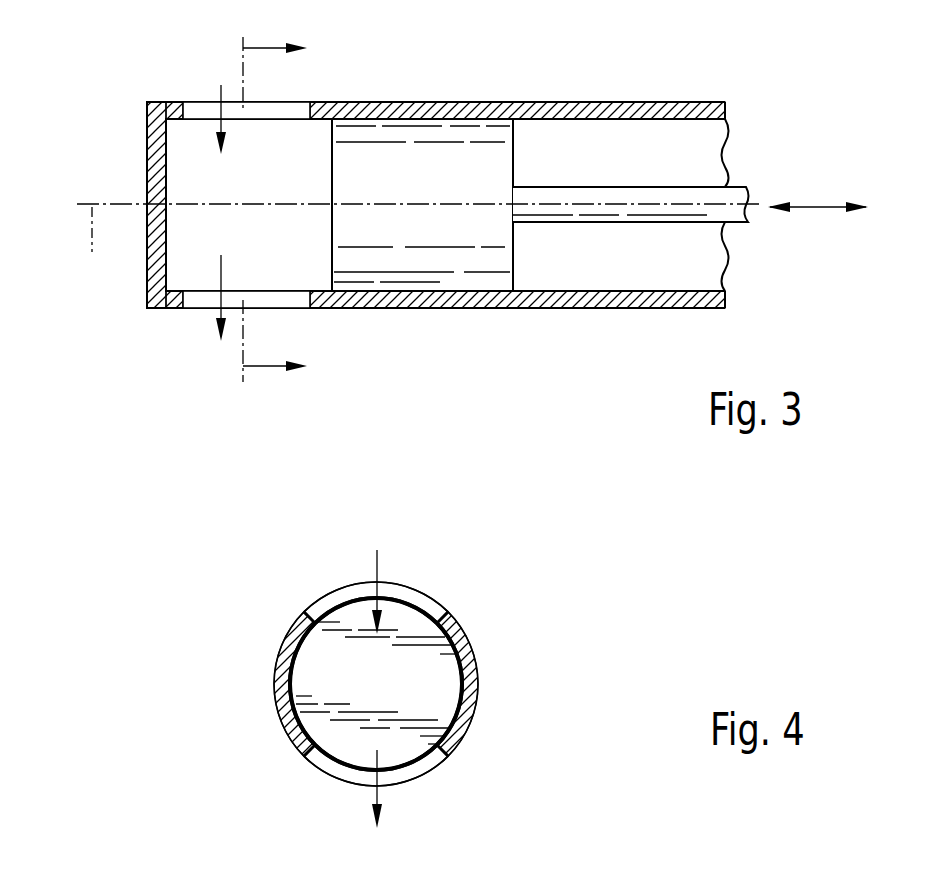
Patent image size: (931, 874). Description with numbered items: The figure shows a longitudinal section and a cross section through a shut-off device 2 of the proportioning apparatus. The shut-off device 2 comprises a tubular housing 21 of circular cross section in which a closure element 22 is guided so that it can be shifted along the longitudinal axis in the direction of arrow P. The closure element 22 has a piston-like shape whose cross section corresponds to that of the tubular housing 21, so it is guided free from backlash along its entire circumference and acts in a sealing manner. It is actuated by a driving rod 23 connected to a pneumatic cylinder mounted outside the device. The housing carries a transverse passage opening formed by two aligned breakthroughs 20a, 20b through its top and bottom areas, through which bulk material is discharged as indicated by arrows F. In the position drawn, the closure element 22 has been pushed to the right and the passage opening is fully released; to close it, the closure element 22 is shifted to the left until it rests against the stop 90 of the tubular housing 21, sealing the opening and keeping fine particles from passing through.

In FIG. 3, the shut-off device 2 is at (491, 82).
In FIG. 4, the shut-off device 2 is at (466, 601).
In FIG. 3, the tubular housing 21 is at (585, 102).
In FIG. 4, the tubular housing 21 is at (470, 693).
In FIG. 3, the closure element 22 is at (413, 150).
In FIG. 4, the closure element 22 is at (440, 672).
In FIG. 3, the driving rod 23 is at (653, 196).
In FIG. 3, the breakthrough 20a is at (197, 106).
In FIG. 4, the breakthrough 20a is at (327, 602).
In FIG. 3, the breakthrough 20b is at (190, 300).
In FIG. 4, the breakthrough 20b is at (420, 768).
In FIG. 3, the stop 90 is at (156, 120).